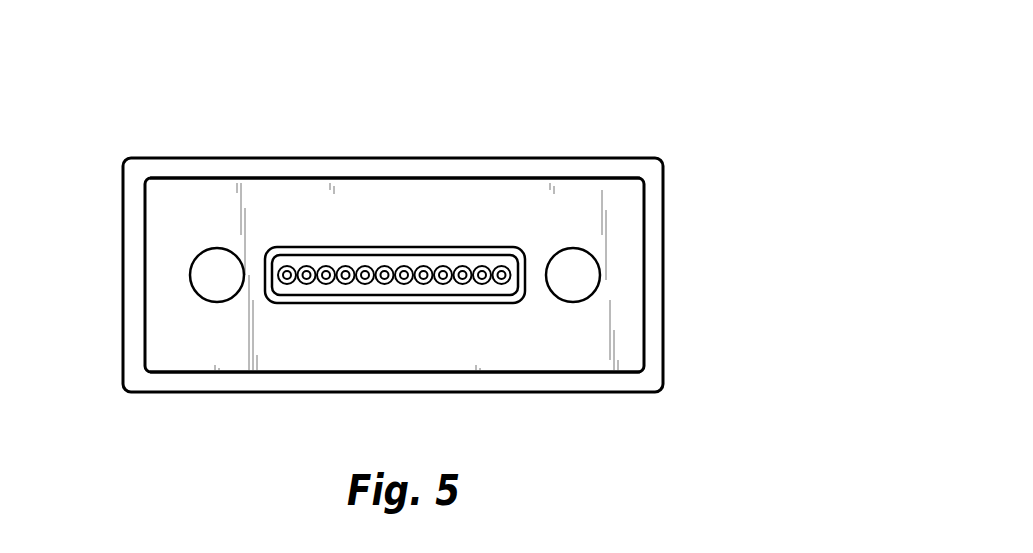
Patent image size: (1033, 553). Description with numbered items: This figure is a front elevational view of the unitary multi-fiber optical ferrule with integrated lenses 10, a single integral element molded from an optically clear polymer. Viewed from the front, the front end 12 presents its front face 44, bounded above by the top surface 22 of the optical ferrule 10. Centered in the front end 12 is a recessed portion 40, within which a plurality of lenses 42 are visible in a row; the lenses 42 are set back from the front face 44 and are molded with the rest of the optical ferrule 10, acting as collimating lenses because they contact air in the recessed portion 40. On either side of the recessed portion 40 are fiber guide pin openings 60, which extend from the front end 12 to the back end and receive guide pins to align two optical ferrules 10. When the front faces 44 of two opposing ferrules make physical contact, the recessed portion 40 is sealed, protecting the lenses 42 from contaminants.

The unitary multi-fiber optical ferrule with integrated lenses 10 is at (701, 101).
The front end 12 is at (646, 347).
The top surface 22 is at (403, 178).
The recessed portion 40 is at (327, 247).
The plurality of lenses 42 is at (405, 270).
The front face 44 is at (297, 348).
The fiber guide pin openings 60 is at (193, 251).